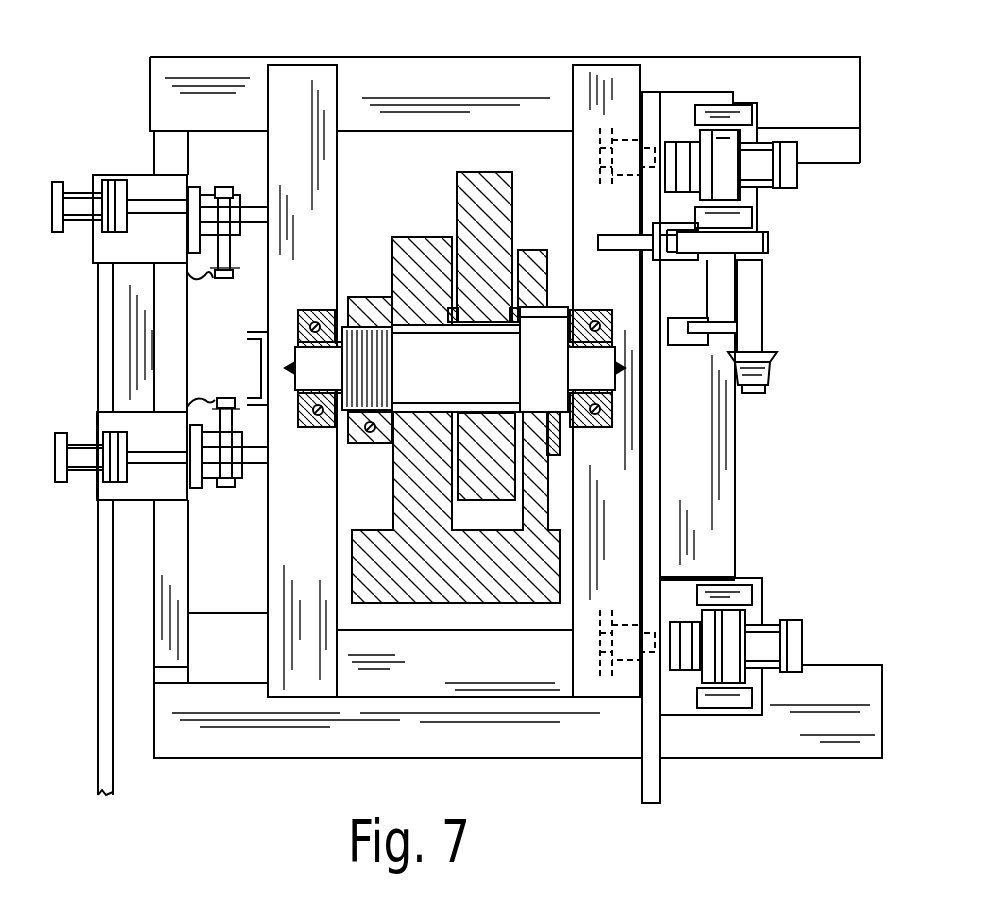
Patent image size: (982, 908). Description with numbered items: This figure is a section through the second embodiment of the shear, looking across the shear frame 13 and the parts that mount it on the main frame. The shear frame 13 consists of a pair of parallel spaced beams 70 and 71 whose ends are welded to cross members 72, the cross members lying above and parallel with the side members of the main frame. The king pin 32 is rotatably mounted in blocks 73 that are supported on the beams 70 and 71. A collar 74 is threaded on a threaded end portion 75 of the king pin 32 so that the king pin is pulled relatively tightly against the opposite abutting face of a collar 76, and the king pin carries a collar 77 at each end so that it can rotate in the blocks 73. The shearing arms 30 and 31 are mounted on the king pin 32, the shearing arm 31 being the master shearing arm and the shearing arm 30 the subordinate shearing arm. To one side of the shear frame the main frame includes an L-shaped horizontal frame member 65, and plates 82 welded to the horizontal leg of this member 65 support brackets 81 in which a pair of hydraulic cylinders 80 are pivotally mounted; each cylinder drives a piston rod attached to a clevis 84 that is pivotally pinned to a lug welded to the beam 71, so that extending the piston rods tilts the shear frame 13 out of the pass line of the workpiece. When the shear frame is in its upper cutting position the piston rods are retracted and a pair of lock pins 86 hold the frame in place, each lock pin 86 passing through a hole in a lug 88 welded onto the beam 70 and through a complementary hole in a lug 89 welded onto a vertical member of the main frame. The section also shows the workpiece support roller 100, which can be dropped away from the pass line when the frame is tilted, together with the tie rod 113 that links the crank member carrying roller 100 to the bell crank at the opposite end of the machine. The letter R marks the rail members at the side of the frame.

The shear frame 13 is at (396, 160).
The subordinate shearing arm 30 is at (500, 172).
The master shearing arm 31 is at (402, 475).
The king pin 32 is at (486, 383).
The L-shaped horizontal frame member 65 is at (713, 468).
The beam 70 is at (319, 570).
The beam 71 is at (592, 647).
The cross member 72 is at (430, 72).
The block 73 is at (310, 430).
The collar 74 is at (377, 437).
The threaded end portion 75 is at (365, 297).
The collar 76 is at (517, 307).
The collar 77 is at (288, 337).
The hydraulic cylinder 80 is at (785, 145).
The bracket 81 is at (740, 218).
The plate 82 is at (677, 120).
The clevis 84 is at (652, 143).
The lock pin 86 is at (225, 185).
The lug 88 is at (248, 215).
The lug 89 is at (237, 240).
The workpiece support roller 100 is at (777, 370).
The tie rod 113 is at (608, 237).
The rails R is at (827, 155).